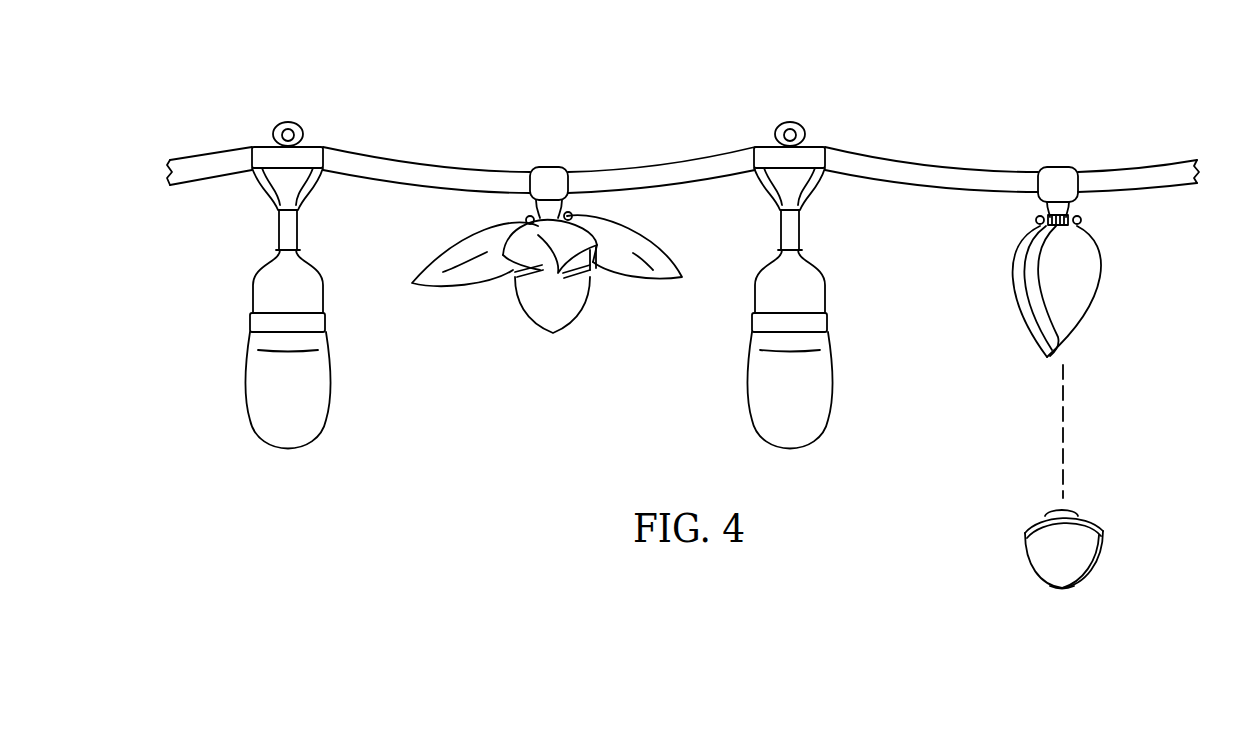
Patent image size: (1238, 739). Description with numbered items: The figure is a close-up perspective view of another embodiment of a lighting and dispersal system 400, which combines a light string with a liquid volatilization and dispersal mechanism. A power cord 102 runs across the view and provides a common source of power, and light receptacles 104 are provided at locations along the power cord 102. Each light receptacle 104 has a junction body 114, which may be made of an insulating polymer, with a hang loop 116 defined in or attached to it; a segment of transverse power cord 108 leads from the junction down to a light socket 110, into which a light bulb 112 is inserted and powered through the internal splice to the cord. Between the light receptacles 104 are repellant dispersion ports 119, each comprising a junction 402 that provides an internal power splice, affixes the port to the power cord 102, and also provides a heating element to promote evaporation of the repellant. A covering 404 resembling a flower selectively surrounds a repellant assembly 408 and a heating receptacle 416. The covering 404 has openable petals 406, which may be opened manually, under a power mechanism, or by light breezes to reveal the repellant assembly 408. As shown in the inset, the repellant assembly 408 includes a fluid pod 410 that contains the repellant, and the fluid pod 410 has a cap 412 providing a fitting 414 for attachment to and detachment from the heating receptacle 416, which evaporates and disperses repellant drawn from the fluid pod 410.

The lighting and dispersal system 400 is at (953, 73).
The power cord 102 is at (427, 165).
The light receptacle 104 is at (762, 115).
The transverse power cord 108 is at (781, 230).
The light socket 110 is at (826, 278).
The light bulb 112 is at (830, 376).
The body 114 is at (815, 183).
The hang loop 116 is at (789, 120).
The repellant dispersion port 119 is at (565, 148).
The junction 402 is at (550, 167).
The covering 404 is at (799, 427).
The petal 406 is at (652, 258).
The repellant assembly 408 is at (851, 462).
The fluid pod 410 is at (1065, 590).
The cap 412 is at (1093, 524).
The fitting 414 is at (1052, 508).
The heating receptacle 416 is at (597, 277).